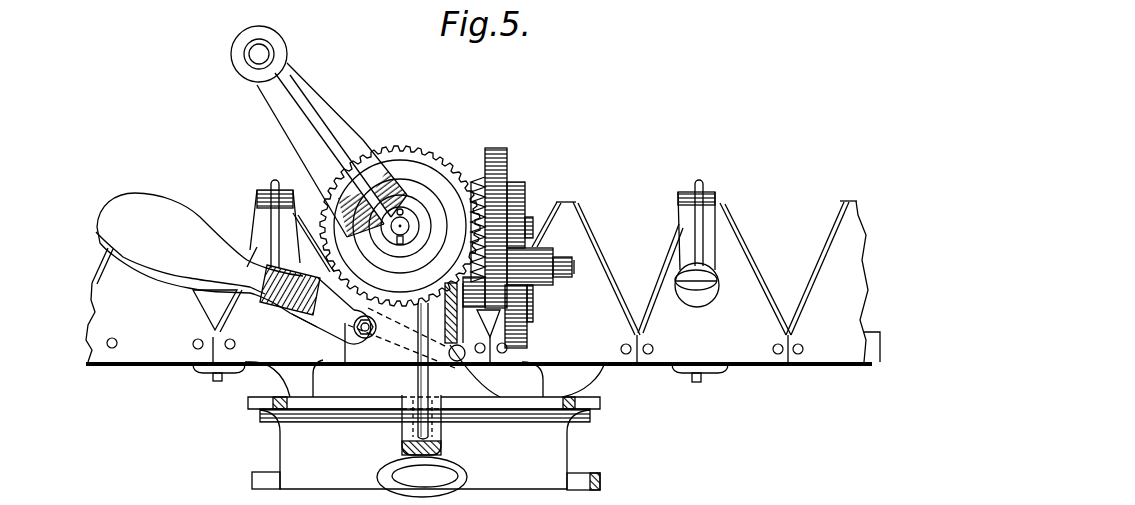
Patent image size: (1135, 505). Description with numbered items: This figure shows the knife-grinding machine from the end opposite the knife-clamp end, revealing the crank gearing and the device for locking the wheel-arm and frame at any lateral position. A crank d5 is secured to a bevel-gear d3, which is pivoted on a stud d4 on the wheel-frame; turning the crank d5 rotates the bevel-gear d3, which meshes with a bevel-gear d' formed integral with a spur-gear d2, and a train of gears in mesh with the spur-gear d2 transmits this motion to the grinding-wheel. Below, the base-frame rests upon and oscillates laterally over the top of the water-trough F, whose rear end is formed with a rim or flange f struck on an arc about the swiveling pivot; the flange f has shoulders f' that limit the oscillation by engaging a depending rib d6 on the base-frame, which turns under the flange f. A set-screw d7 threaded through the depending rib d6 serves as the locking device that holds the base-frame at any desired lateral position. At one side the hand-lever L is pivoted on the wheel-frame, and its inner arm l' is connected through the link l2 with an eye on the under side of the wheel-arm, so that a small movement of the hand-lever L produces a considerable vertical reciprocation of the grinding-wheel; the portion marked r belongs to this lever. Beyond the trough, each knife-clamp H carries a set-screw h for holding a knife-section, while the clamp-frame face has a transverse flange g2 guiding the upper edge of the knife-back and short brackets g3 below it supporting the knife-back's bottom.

The crank d5 is at (319, 131).
The bevel-gear d3 is at (427, 165).
The stud d4 is at (411, 226).
The bevel-gear d' is at (473, 204).
The spur-gear d2 is at (508, 163).
The depending rib d6 is at (410, 422).
The set-screw d7 is at (388, 470).
The hand-lever L is at (170, 192).
The handle grip r is at (180, 261).
The knife-clamp H is at (256, 214).
The set-screw h is at (719, 282).
The rib or flange g2 is at (639, 322).
The short ribs or brackets g3 is at (213, 372).
The inner arm l' is at (326, 304).
The link l2 is at (472, 340).
The shoulders f' is at (421, 405).
The rim or flange f is at (425, 380).
The water-trough F is at (522, 450).